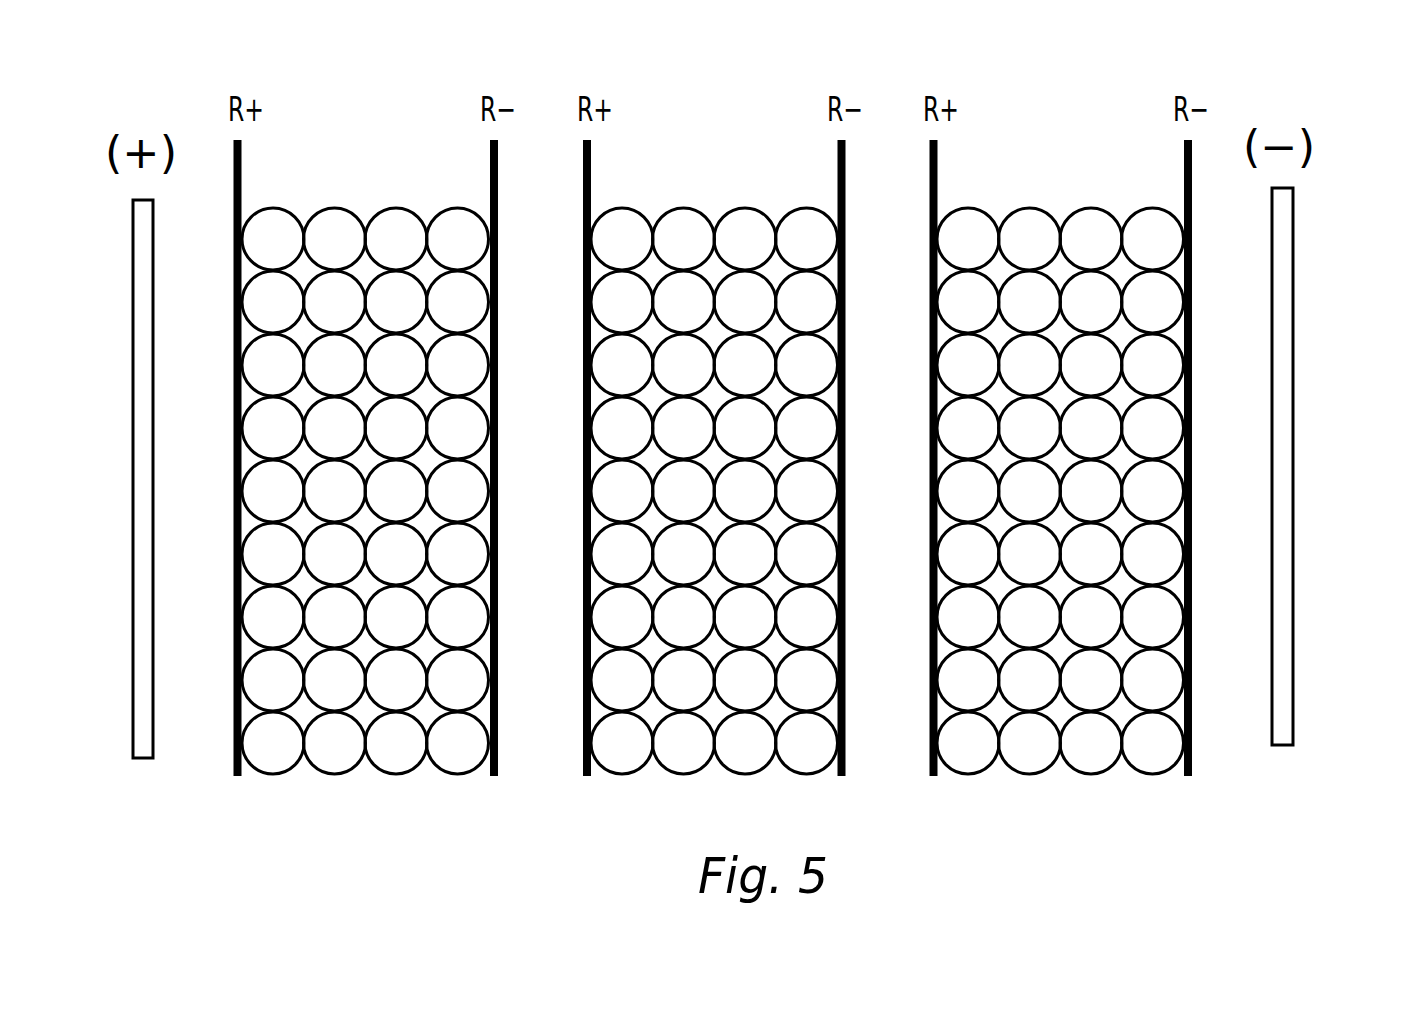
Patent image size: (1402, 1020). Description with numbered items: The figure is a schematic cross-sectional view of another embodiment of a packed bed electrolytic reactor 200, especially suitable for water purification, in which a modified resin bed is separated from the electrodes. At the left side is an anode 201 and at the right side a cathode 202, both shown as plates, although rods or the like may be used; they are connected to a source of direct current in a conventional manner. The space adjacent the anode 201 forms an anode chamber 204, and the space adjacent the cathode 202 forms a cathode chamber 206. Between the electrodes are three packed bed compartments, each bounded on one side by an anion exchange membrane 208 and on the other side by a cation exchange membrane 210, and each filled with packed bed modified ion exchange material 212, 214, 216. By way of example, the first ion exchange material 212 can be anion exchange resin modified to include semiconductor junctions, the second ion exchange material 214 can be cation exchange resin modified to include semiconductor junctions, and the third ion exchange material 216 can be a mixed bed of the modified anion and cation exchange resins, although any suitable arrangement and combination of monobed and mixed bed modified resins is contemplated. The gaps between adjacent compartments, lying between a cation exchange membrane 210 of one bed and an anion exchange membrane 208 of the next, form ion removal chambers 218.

The electrolytic reactor 200 is at (382, 82).
The anode 201 is at (167, 725).
The cathode 202 is at (1300, 712).
The anode chamber 204 is at (220, 407).
The cathode chamber 206 is at (1255, 399).
The anion exchange membranes 208 is at (247, 775).
The cation exchange membranes 210 is at (503, 771).
The packed bed modified ion exchange material 212 is at (388, 200).
The packed bed modified ion exchange material 214 is at (735, 196).
The packed bed modified ion exchange material 216 is at (1082, 194).
The ion removal chambers 218 is at (565, 405).